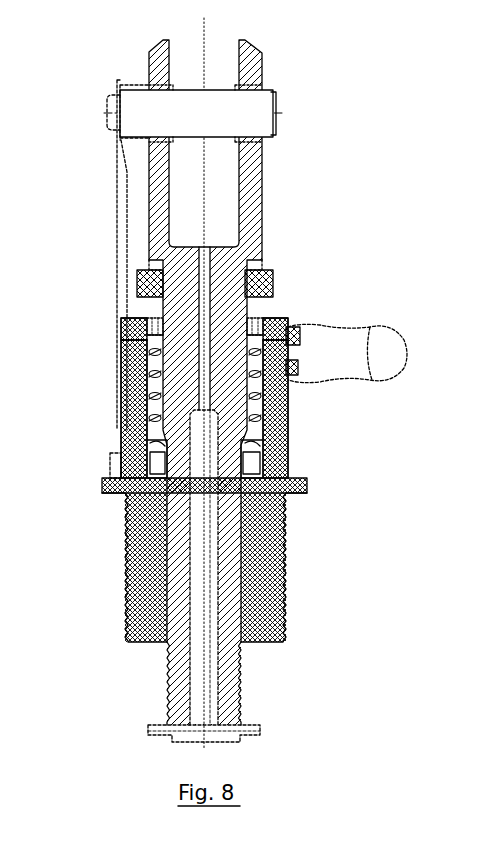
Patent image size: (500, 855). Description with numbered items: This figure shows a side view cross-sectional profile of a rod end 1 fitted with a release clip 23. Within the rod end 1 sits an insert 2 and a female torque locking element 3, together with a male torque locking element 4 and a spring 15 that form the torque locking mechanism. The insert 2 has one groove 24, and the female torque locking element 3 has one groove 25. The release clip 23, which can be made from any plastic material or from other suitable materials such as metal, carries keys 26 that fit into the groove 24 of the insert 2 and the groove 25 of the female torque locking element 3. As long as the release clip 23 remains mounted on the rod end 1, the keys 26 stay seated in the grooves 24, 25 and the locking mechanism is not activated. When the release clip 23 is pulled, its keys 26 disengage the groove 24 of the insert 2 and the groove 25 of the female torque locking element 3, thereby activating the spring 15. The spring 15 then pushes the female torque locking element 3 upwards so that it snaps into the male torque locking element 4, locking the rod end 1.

The rod end 1 is at (305, 160).
The insert 2 is at (133, 522).
The female torque locking element 3 is at (135, 325).
The male torque locking element 4 is at (259, 278).
The spring 15 is at (252, 451).
The release clip 23 is at (338, 347).
The groove in insert 24 is at (123, 373).
The groove in female torque locking element 25 is at (123, 331).
The keys 26 is at (284, 373).